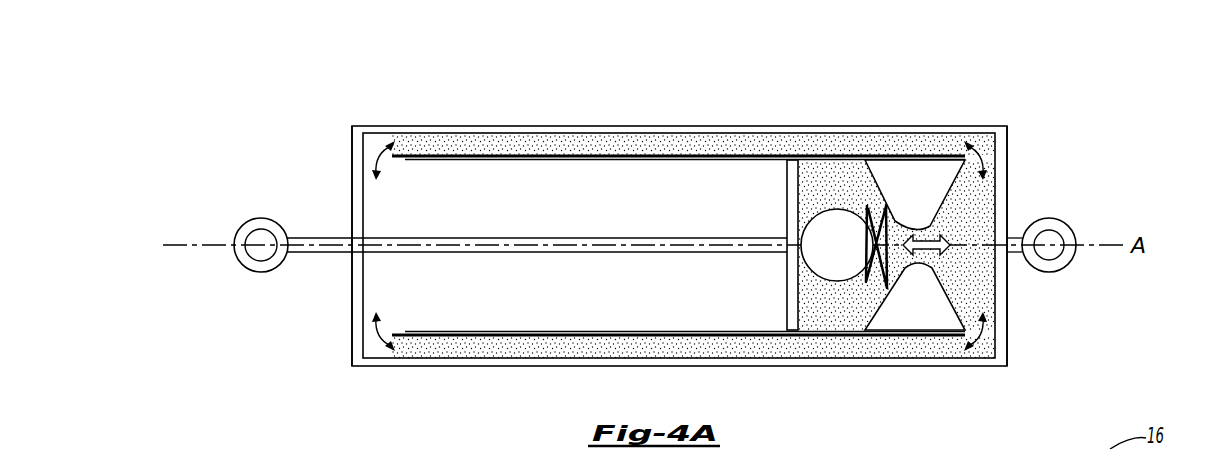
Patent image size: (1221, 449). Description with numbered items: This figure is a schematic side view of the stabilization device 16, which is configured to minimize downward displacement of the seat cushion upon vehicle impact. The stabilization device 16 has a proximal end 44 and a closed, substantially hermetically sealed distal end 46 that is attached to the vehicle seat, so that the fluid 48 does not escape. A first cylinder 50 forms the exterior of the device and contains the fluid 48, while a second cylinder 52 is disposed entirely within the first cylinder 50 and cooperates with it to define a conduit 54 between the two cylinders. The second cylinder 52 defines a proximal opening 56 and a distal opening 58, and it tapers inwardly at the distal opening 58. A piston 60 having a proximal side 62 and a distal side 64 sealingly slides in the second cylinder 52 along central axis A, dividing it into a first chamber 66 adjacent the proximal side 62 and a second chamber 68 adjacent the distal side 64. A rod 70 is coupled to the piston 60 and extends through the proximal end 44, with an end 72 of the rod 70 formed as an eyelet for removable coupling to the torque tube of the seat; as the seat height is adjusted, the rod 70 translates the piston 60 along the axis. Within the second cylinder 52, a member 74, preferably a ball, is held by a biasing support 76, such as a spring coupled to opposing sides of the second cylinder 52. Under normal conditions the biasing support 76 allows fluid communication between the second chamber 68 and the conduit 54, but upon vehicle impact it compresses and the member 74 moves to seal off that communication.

The stabilization device 16 is at (1024, 66).
The proximal end 44 is at (352, 152).
The distal end 46 is at (1007, 157).
The fluid 48 is at (985, 297).
The first cylinder 50 is at (558, 126).
The second cylinder 52 is at (724, 153).
The conduit 54 is at (661, 143).
The proximal opening 56 is at (430, 205).
The distal opening 58 is at (940, 228).
The piston 60 is at (795, 158).
The proximal side 62 is at (780, 207).
The distal side 64 is at (806, 298).
The first chamber 66 is at (613, 209).
The second chamber 68 is at (844, 191).
The rod 70 is at (312, 254).
The end of the rod 72 is at (248, 222).
The member 74 is at (849, 236).
The biasing support 76 is at (896, 220).